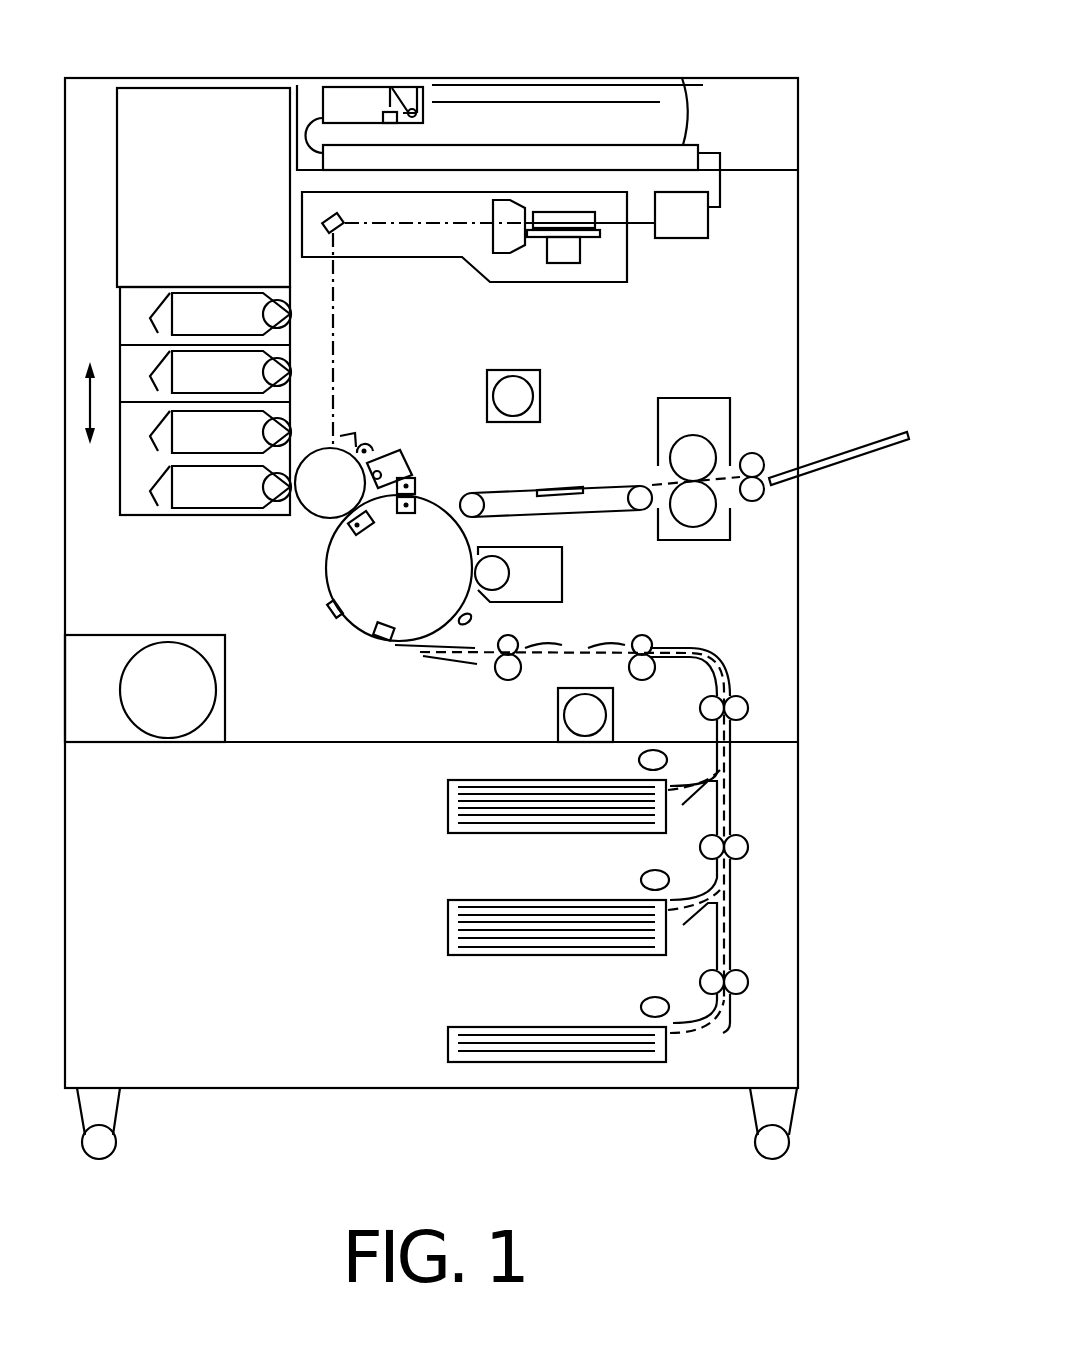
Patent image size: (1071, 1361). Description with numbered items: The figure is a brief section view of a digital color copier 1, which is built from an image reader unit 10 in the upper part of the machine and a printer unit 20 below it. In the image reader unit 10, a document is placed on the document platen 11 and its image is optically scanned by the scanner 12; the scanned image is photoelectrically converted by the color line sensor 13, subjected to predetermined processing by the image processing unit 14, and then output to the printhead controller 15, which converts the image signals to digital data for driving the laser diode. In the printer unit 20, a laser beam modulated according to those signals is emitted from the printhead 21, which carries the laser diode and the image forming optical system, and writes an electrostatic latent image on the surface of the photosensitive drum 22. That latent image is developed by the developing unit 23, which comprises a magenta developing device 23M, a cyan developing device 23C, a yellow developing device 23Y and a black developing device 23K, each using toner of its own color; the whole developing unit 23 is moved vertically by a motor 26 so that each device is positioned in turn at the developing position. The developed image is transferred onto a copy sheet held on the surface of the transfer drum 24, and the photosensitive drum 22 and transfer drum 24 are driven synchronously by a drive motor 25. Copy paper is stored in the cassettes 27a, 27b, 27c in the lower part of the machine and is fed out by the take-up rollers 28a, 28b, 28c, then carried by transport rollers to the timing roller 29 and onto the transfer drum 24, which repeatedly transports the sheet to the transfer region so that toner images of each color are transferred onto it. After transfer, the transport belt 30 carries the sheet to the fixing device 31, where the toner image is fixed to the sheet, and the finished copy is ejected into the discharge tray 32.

The digital color copier 1 is at (162, 57).
The image reader unit 10 is at (531, 137).
The document platen 11 is at (549, 78).
The scanner 12 is at (350, 103).
The color line sensor 13 is at (407, 130).
The image processing unit 14 is at (682, 78).
The printhead controller 15 is at (677, 240).
The printer unit 20 is at (419, 383).
The printhead 21 is at (455, 270).
The photosensitive drum 22 is at (308, 520).
The developing unit 23 is at (100, 322).
The magenta developing device 23M is at (220, 314).
The cyan developing device 23C is at (220, 372).
The yellow developing device 23Y is at (220, 432).
The black developing device 23K is at (220, 487).
The transfer drum 24 is at (327, 597).
The drive motor 25 is at (542, 387).
The motor 26 is at (167, 641).
The cassette 27a is at (448, 806).
The cassette 27b is at (448, 927).
The cassette 27c is at (448, 1053).
The take-up roller 28a is at (638, 760).
The take-up roller 28b is at (640, 880).
The take-up roller 28c is at (640, 1007).
The timing roller 29 is at (497, 680).
The transport belt 30 is at (498, 490).
The fixing device 31 is at (695, 397).
The discharge tray 32 is at (820, 455).